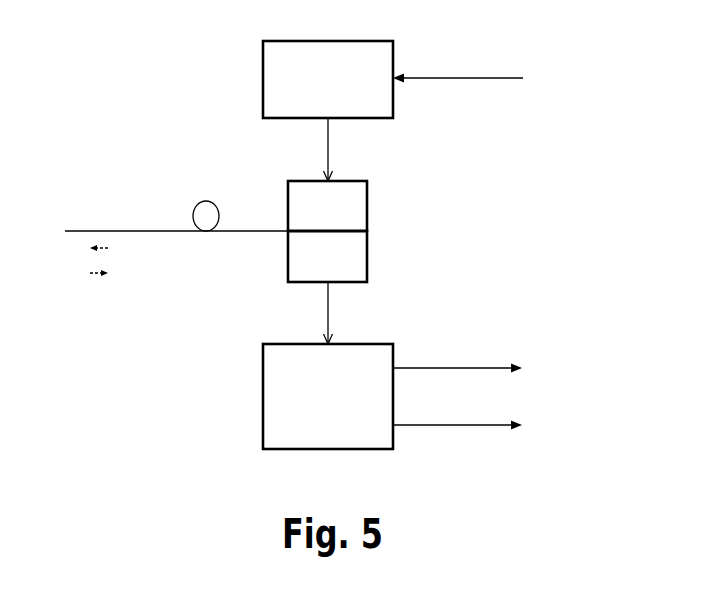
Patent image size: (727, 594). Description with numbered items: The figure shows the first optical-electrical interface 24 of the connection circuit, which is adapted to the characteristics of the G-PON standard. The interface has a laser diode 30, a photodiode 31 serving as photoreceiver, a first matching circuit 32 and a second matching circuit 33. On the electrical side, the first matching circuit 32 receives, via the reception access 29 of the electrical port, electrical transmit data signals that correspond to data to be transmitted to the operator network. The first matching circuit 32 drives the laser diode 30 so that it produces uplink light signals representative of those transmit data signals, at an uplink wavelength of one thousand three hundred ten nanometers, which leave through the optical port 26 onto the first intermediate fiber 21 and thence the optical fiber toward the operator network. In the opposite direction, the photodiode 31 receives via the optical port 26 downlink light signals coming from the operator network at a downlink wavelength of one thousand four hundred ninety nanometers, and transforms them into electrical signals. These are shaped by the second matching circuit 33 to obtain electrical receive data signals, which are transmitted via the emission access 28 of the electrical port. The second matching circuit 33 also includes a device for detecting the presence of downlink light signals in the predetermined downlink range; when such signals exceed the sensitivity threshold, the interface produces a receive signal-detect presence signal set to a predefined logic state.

The first intermediate fiber 21 is at (165, 233).
The first optical-electrical interface 24 is at (411, 231).
The optical port 26 is at (288, 229).
The emission access 28 is at (396, 360).
The reception access 29 is at (396, 72).
The laser diode 30 is at (369, 209).
The photodiode 31 is at (433, 229).
The first matching circuit 32 is at (268, 80).
The second matching circuit 33 is at (270, 398).